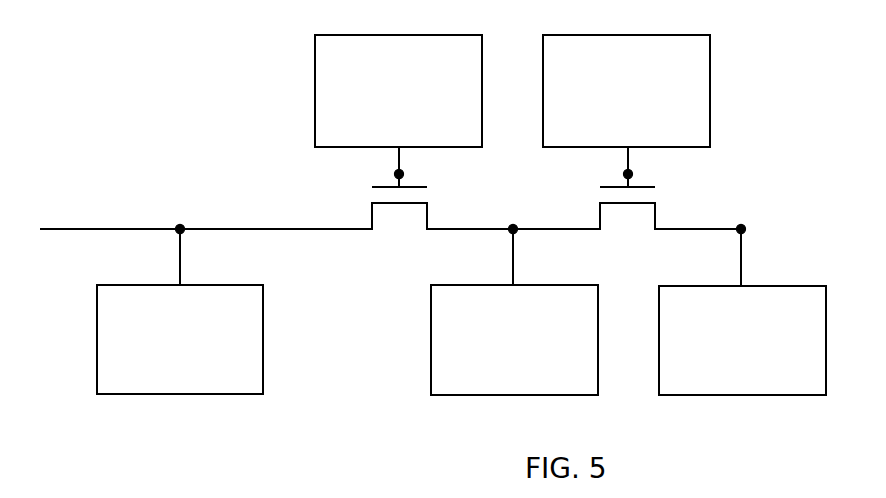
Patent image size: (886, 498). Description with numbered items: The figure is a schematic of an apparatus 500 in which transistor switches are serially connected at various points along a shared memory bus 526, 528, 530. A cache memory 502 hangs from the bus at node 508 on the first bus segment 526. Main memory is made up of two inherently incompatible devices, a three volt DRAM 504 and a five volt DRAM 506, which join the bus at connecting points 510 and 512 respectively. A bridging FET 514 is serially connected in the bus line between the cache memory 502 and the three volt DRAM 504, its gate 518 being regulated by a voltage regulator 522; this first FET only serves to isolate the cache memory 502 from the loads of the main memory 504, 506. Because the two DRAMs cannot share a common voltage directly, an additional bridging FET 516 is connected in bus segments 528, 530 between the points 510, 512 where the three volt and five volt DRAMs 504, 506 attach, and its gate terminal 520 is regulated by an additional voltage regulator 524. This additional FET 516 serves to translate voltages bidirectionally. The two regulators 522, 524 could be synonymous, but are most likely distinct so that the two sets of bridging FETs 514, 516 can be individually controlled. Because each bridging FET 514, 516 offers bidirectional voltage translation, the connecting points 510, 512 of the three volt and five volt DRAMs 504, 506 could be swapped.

The apparatus 500 is at (222, 86).
The cache memory 502 is at (97, 339).
The 3 V DRAM 504 is at (431, 374).
The 5 V DRAM 506 is at (787, 286).
The bus node 508 is at (178, 232).
The connecting point 510 is at (513, 229).
The connecting point 512 is at (741, 229).
The bridging FET 514 is at (398, 228).
The additional bridging FET 516 is at (632, 228).
The first switch control input 518 is at (399, 174).
The gate terminal 520 is at (628, 174).
The voltage regulator 522 is at (482, 88).
The additional voltage regulator 524 is at (710, 88).
The bus 526 is at (103, 229).
The bus 528 is at (557, 231).
The bus 530 is at (703, 229).